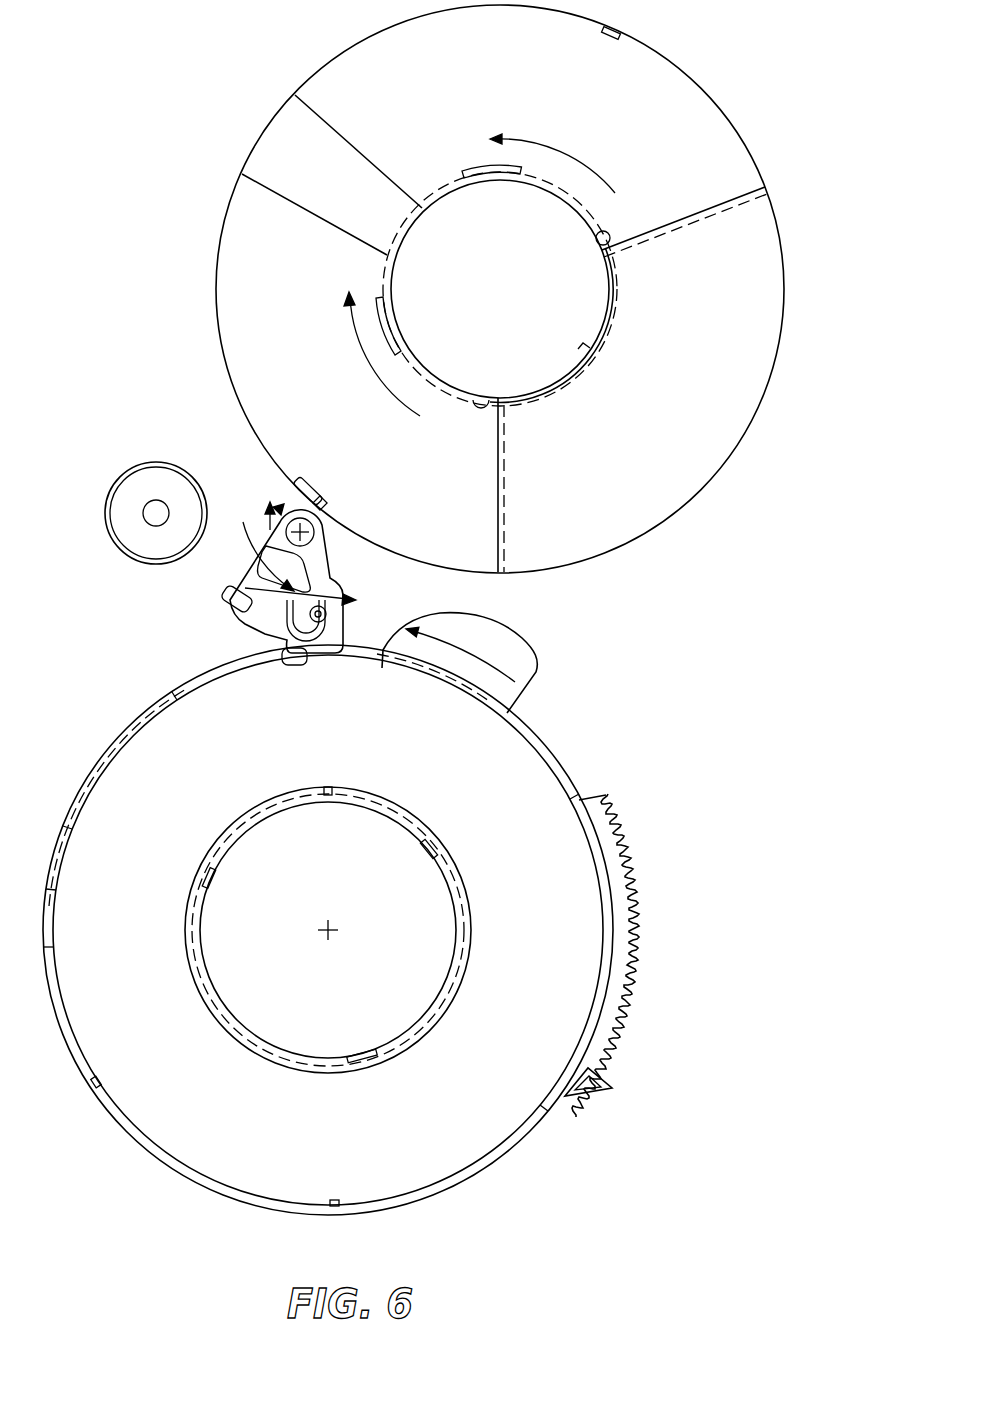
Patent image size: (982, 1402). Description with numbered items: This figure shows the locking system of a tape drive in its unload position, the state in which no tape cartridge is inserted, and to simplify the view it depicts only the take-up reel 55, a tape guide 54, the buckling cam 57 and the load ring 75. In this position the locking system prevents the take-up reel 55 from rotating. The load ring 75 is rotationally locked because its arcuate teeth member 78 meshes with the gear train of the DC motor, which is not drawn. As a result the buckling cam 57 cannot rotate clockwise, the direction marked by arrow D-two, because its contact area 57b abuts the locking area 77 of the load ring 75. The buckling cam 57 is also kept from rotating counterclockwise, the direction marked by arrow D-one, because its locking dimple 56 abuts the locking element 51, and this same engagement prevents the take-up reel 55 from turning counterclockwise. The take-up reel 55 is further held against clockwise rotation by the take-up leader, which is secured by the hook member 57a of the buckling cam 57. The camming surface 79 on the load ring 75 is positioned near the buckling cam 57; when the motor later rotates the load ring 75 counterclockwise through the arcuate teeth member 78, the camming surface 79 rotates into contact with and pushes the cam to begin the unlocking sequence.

The locking element 51 is at (328, 504).
The tape guide 54 is at (137, 541).
The take-up reel 55 is at (738, 182).
The locking dimple 56 is at (309, 482).
The buckling cam 57 is at (280, 500).
The hook member 57a is at (332, 616).
The contact area 57b is at (300, 666).
The load ring 75 is at (476, 1116).
The locking area 77 is at (270, 647).
The arcuate teeth member 78 is at (622, 943).
The camming surface 79 is at (536, 684).